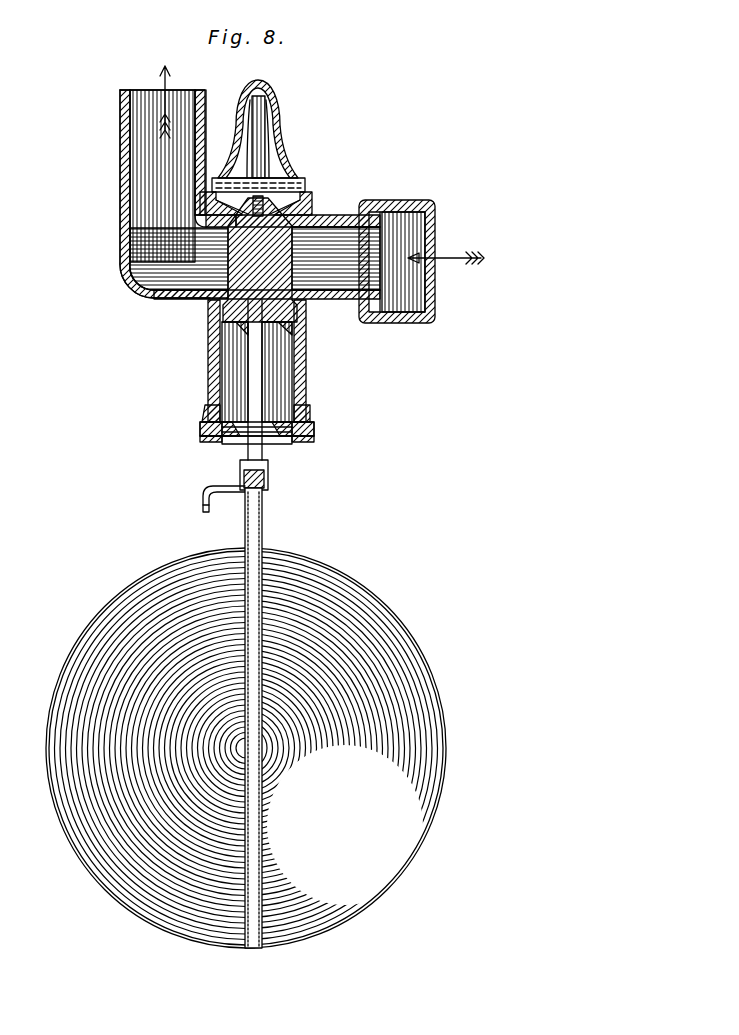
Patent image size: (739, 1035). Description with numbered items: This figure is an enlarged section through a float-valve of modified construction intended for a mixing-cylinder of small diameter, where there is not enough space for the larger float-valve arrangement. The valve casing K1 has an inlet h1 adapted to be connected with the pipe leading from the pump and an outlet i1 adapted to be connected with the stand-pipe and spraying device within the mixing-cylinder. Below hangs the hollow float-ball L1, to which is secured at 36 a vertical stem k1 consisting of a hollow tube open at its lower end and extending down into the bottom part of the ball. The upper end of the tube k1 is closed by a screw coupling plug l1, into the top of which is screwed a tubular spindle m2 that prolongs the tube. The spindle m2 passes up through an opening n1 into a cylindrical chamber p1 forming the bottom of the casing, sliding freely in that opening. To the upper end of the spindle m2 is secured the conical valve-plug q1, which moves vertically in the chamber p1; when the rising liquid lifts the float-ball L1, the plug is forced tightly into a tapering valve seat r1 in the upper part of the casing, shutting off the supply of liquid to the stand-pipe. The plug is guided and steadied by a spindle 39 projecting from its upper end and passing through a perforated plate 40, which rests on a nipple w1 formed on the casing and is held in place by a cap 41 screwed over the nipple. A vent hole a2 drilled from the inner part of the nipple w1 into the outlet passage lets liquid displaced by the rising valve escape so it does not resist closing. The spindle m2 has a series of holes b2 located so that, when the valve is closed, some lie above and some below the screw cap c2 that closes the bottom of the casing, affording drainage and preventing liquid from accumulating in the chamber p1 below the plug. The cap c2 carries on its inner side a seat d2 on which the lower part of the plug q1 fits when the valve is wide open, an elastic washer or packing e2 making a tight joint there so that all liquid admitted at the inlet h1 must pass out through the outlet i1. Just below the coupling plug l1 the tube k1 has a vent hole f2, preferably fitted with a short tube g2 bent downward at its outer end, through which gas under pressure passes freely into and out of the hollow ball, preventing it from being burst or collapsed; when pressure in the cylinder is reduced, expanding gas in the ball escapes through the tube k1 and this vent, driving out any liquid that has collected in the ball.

The outlet i1 is at (149, 106).
The vent hole a2 is at (203, 219).
The valve casing K1 is at (302, 226).
The cap 41 is at (272, 110).
The spindle 39 is at (264, 134).
The nipple w1 is at (303, 152).
The perforated plate 40 is at (230, 170).
The tapering valve seat r1 is at (305, 200).
The inlet h1 is at (412, 262).
The conical valve-plug q1 is at (232, 270).
The cylindrical chamber p1 is at (230, 362).
The tubular spindle m2 is at (258, 382).
The elastic washer or packing e2 is at (282, 334).
The seat d2 is at (218, 412).
The screw cap c2 is at (224, 428).
The holes b2 is at (210, 444).
The opening n1 is at (240, 446).
The screw coupling plug l1 is at (268, 472).
The short tube g2 is at (206, 498).
The vent hole f2 is at (244, 502).
The hollow float-ball L1 is at (246, 748).
The point of securing 36 is at (266, 564).
The vertical stem k1 is at (264, 498).